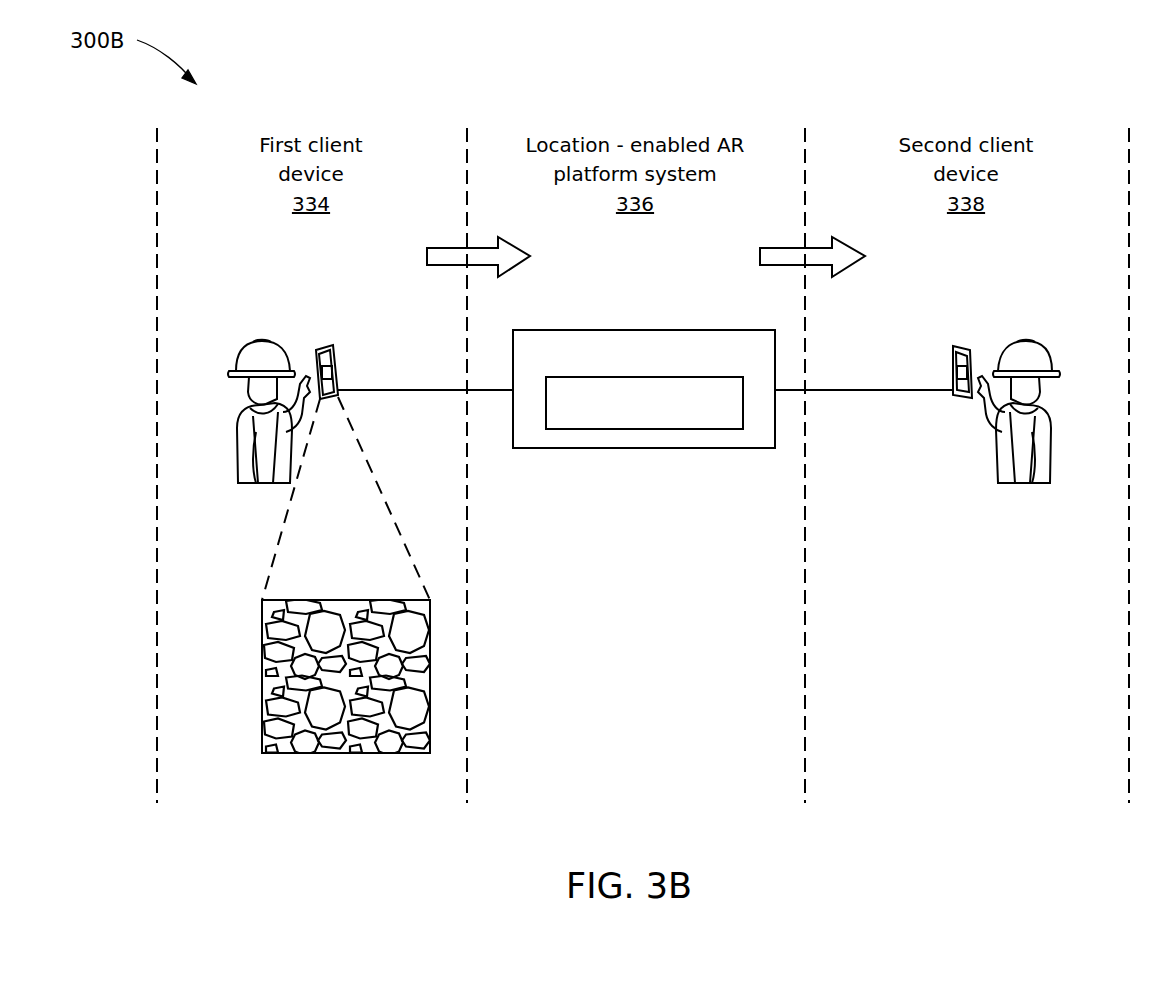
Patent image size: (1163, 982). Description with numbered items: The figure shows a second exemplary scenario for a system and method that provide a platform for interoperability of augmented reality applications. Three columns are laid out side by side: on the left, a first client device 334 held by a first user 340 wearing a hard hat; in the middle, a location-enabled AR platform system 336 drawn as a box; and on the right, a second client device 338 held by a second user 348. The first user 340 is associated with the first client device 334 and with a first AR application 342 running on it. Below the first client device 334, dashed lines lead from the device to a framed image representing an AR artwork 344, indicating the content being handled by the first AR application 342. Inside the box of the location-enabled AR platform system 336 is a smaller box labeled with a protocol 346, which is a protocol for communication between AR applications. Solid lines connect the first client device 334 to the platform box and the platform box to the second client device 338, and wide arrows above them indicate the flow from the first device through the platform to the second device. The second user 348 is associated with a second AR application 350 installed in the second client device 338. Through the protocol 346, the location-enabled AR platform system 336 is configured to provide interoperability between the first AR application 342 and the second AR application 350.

The first client device 334 is at (325, 346).
The location-enabled AR platform system 336 is at (642, 330).
The second client device 338 is at (960, 346).
The first user 340 is at (253, 340).
The first AR application 342 is at (338, 370).
The AR artwork 344 is at (343, 757).
The protocol 346 is at (644, 403).
The second user 348 is at (1033, 340).
The second AR application 350 is at (945, 400).